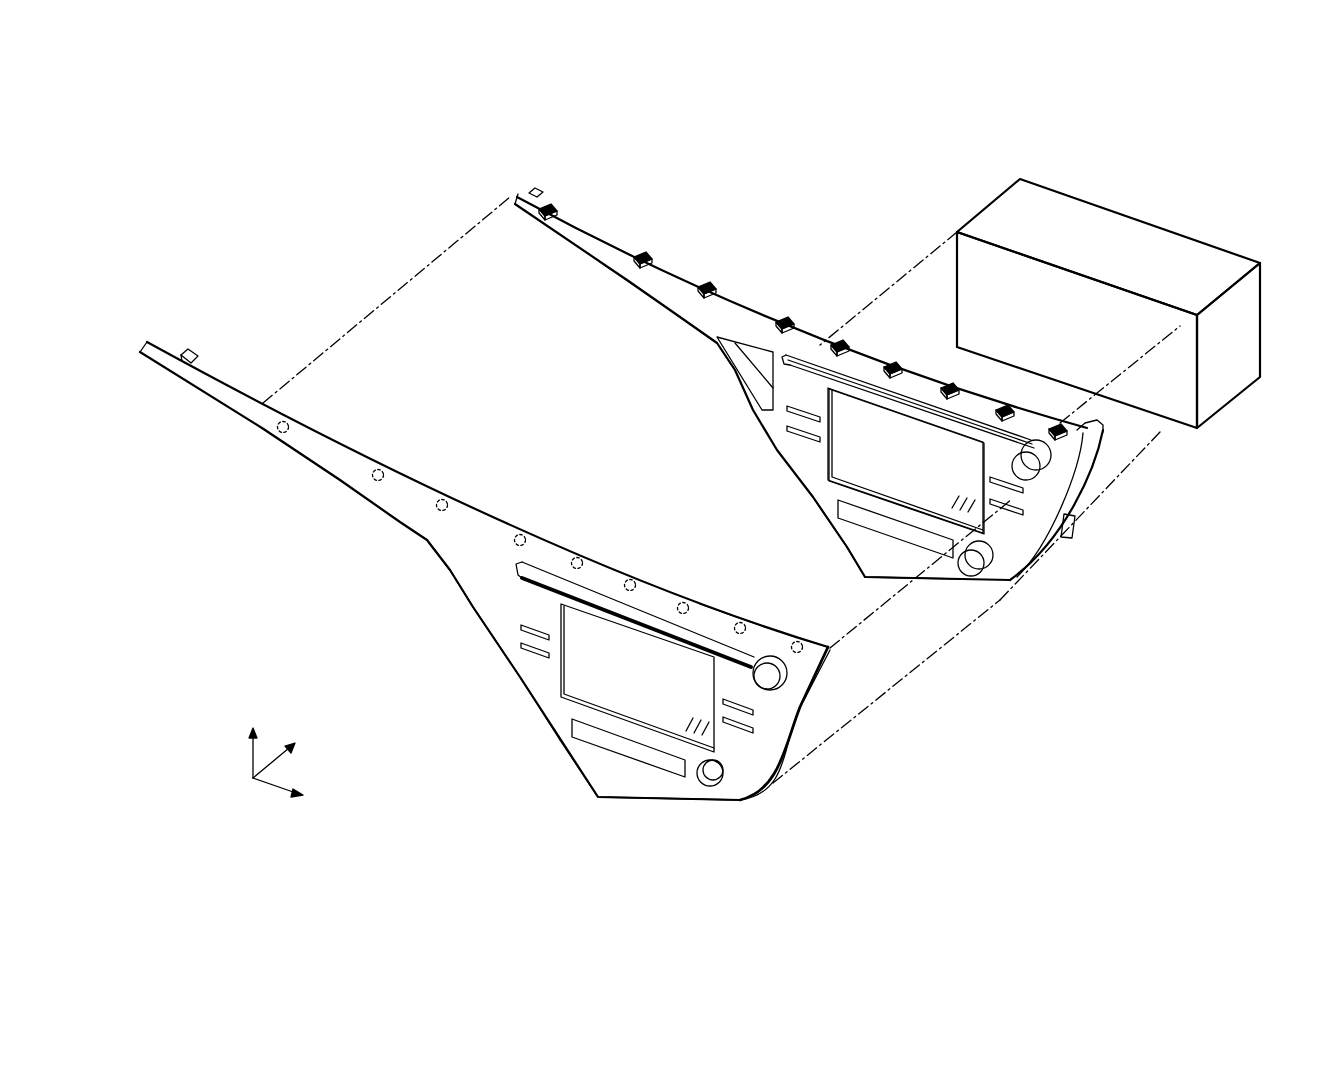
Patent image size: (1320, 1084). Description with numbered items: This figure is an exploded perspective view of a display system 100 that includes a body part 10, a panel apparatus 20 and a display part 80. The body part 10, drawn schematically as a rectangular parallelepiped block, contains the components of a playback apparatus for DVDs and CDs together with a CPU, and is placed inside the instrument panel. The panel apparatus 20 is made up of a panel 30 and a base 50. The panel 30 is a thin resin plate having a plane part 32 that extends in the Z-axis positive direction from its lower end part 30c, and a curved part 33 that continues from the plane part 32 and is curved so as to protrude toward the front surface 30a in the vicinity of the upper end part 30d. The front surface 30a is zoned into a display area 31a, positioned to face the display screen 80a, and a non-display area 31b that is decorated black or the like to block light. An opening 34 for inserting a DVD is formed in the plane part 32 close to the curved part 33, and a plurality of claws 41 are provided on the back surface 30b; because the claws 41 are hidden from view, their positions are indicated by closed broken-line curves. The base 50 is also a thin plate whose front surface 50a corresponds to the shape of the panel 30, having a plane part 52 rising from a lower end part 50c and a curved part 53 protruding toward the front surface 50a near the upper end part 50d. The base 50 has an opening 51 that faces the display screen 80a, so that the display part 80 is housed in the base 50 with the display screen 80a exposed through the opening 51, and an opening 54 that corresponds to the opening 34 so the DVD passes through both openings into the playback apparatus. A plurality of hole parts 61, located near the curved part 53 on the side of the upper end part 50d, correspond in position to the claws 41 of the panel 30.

The display system 100 is at (1203, 149).
The body part 10 is at (1071, 208).
The panel apparatus 20 is at (345, 177).
The panel 30 is at (229, 382).
The front surface 30a is at (438, 533).
The back surface 30b is at (808, 703).
The lower end part 30c is at (598, 783).
The upper end part 30d is at (832, 648).
The display area 31a is at (580, 690).
The non-display area 31b is at (527, 607).
The plane part 32 is at (772, 732).
The curved part 33 is at (802, 667).
The opening 34 is at (549, 572).
The claws 41 is at (289, 427).
The base 50 is at (511, 194).
The front surface 50a is at (712, 323).
The lower end part 50c is at (864, 556).
The upper end part 50d is at (1093, 438).
The opening 51 is at (838, 488).
The plane part 52 is at (1024, 538).
The curved part 53 is at (1072, 437).
The opening 54 is at (808, 362).
The hole parts 61 is at (553, 212).
The display part 80 is at (848, 457).
The display screen 80a is at (888, 473).